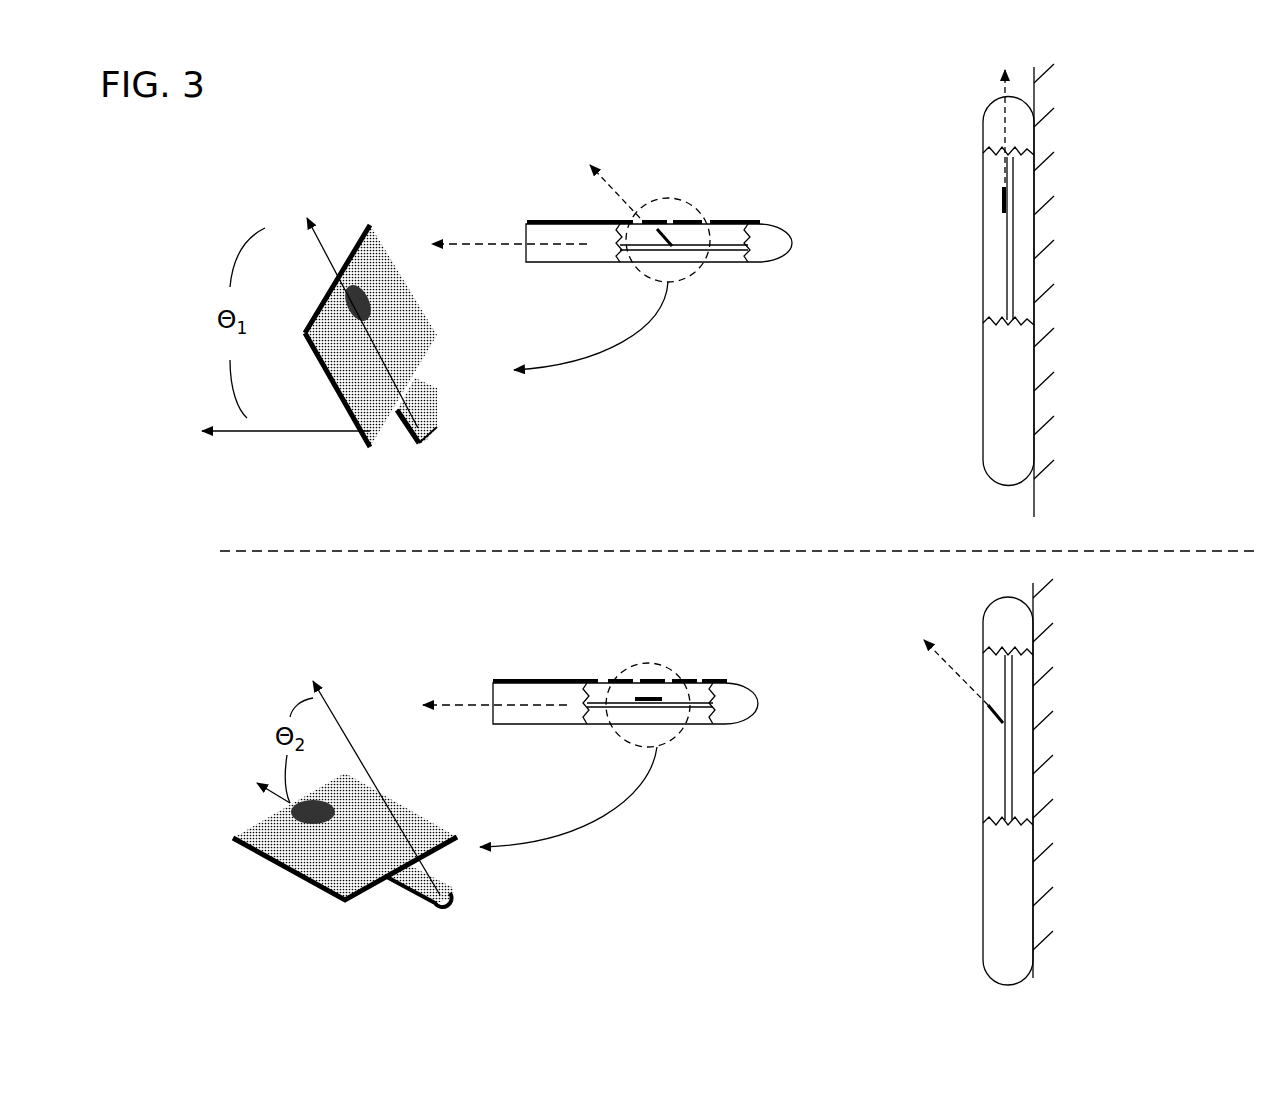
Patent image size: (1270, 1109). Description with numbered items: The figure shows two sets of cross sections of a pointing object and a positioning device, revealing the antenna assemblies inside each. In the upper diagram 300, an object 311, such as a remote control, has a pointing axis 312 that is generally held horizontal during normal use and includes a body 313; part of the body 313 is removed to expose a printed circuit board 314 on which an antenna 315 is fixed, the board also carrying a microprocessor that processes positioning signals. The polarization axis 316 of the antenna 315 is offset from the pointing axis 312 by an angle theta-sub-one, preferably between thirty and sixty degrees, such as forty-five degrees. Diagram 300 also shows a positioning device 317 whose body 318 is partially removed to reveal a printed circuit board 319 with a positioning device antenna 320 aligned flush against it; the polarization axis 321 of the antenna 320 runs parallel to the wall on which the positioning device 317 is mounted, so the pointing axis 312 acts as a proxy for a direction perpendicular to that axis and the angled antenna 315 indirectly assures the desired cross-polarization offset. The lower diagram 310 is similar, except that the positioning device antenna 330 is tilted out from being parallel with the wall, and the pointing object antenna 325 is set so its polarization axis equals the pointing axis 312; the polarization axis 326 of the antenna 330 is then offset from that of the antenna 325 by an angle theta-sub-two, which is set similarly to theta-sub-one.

The diagram 300 is at (1235, 126).
The diagram 310 is at (1243, 598).
The object 311 is at (549, 187).
The pointing axis 312 is at (465, 241).
The body 313 is at (765, 246).
The printed circuit board 314 is at (725, 245).
The antenna 315 is at (667, 243).
The polarization axis 316 is at (257, 200).
The positioning device 317 is at (951, 459).
The body 318 is at (1012, 402).
The printed circuit board 319 is at (1010, 230).
The positioning device antenna 320 is at (1002, 200).
The polarization axis 321 is at (974, 126).
The antenna 325 is at (648, 698).
The polarization axis 326 is at (286, 667).
The antenna 330 is at (1003, 715).